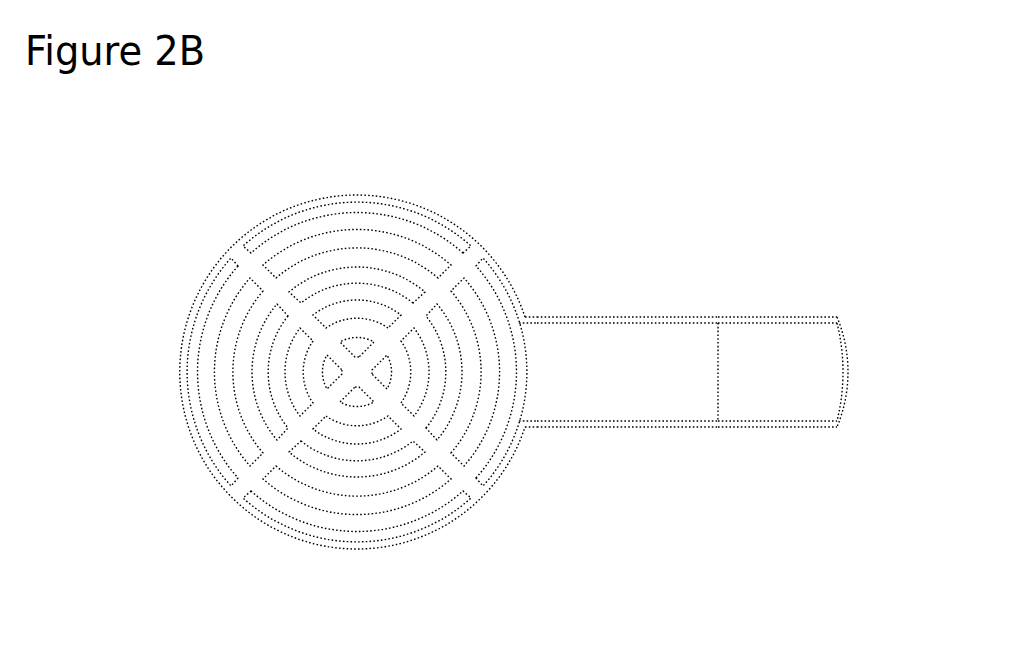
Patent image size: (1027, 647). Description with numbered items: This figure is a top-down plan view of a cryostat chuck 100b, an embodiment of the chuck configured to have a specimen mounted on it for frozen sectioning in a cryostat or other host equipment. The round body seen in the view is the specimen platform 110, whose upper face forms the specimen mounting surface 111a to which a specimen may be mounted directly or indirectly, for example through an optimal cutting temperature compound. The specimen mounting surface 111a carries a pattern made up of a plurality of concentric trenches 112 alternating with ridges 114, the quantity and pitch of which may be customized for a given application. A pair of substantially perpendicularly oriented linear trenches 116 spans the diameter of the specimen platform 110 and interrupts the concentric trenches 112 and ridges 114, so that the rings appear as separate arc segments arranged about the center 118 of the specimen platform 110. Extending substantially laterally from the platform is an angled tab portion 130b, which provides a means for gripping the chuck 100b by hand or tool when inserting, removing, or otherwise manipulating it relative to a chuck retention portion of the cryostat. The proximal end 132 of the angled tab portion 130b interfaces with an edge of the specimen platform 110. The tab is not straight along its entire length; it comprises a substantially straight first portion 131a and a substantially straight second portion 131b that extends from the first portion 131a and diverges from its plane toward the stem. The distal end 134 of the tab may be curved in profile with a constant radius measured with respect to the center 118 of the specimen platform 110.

The cryostat chuck 100b is at (838, 117).
The specimen platform 110 is at (505, 469).
The specimen mounting surface 111a is at (228, 335).
The concentric trenches 112 is at (393, 445).
The ridges 114 is at (347, 312).
The linear trenches 116 is at (233, 245).
The center of specimen platform 118 is at (357, 373).
The angled tab portion 130b is at (678, 309).
The first portion 131a is at (624, 347).
The second portion 131b is at (770, 347).
The proximal end 132 is at (527, 320).
The distal end 134 is at (850, 376).